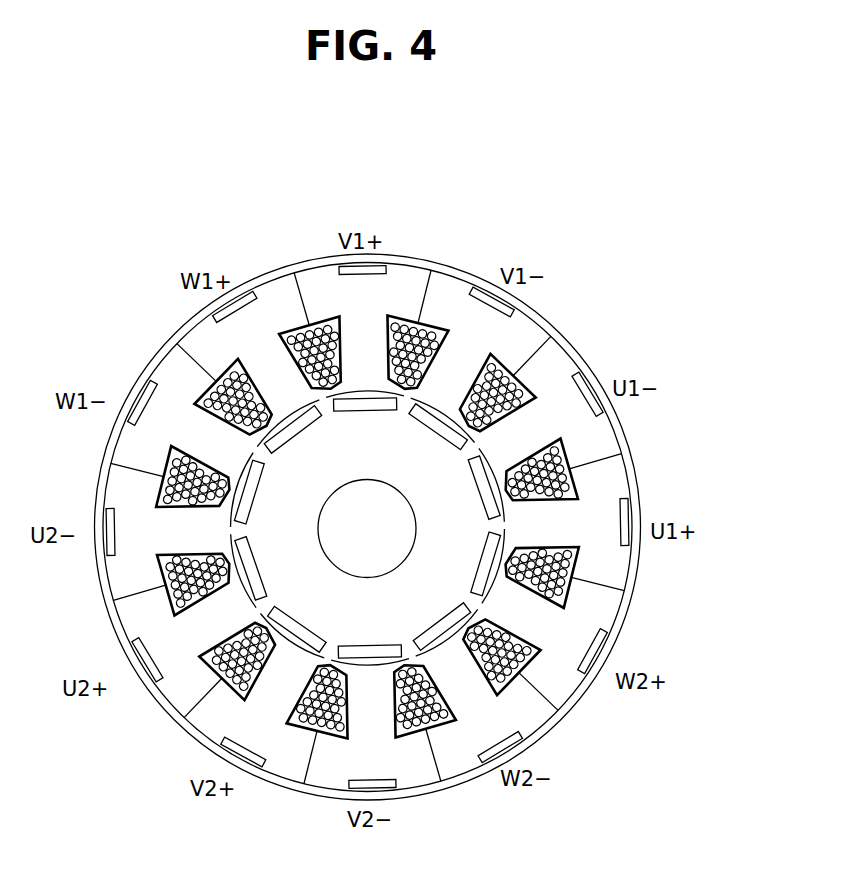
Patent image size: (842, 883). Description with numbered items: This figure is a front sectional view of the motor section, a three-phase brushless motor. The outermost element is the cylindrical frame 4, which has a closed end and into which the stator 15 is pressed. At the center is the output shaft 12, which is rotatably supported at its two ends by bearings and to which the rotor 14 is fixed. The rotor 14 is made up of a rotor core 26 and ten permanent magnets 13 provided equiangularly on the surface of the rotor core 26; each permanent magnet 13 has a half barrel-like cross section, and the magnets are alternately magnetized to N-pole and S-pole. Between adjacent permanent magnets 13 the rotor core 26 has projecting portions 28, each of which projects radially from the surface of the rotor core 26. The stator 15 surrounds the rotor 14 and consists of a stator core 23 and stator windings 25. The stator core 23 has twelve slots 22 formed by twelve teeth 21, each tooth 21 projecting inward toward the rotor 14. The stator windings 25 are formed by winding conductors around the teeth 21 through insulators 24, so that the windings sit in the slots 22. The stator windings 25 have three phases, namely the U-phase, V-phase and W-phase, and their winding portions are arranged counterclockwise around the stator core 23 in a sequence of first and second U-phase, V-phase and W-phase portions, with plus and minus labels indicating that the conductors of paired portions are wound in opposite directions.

The frame 4 is at (176, 742).
The output shaft 12 is at (372, 505).
The permanent magnet 13 is at (437, 417).
The rotor 14 is at (508, 432).
The stator 15 is at (415, 320).
The tooth 21 is at (277, 383).
The slot 22 is at (178, 585).
The stator core 23 is at (548, 655).
The insulator 24 is at (573, 598).
The stator winding 25 is at (331, 332).
The rotor core 26 is at (463, 526).
The projecting portion 28 is at (305, 660).